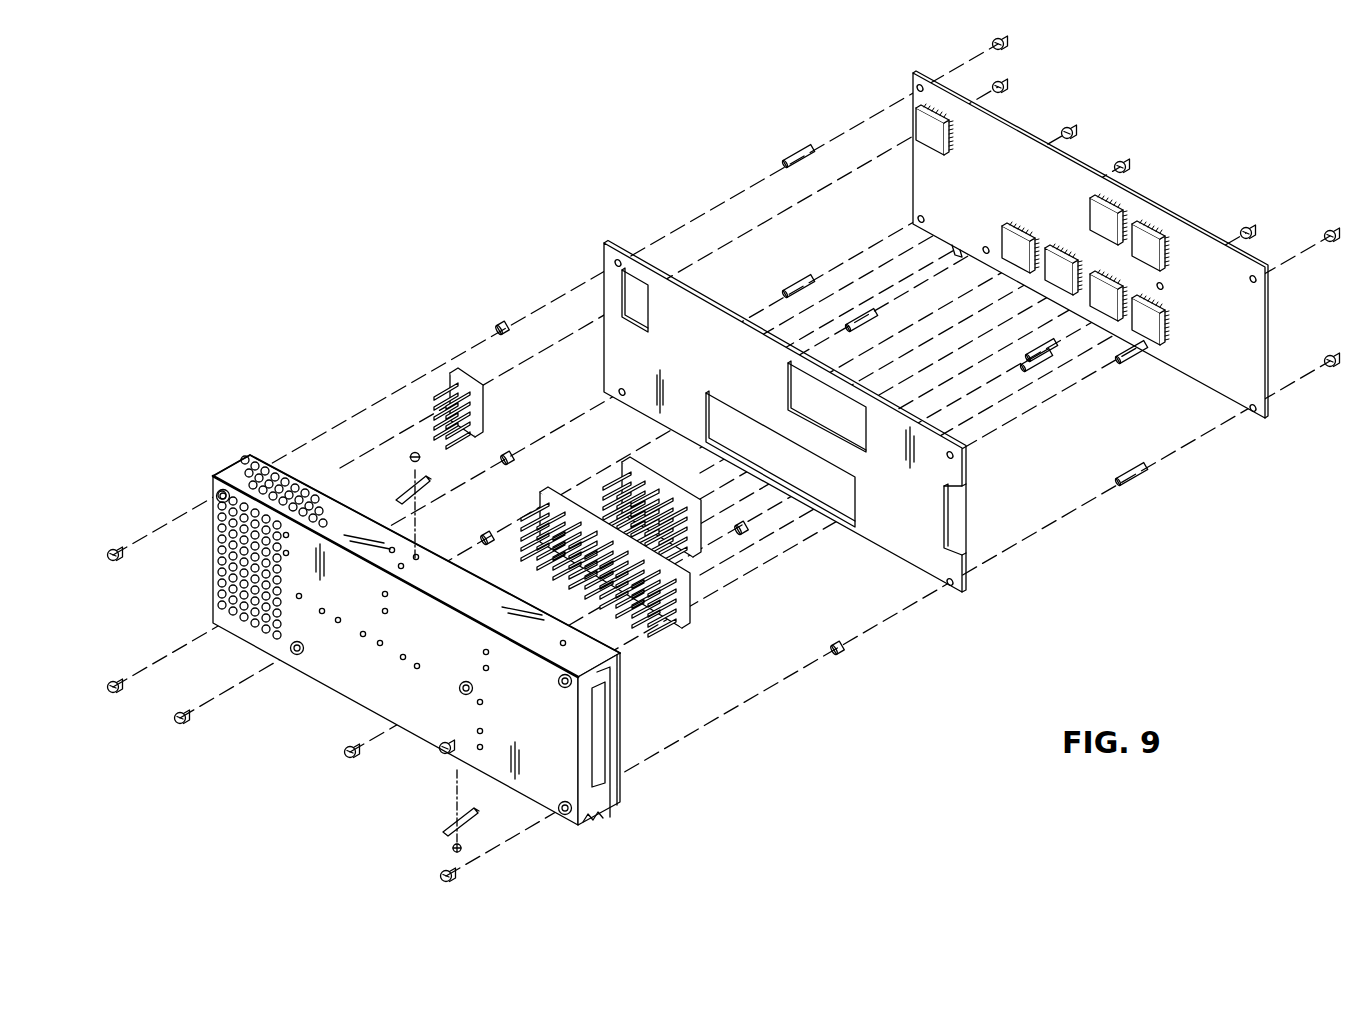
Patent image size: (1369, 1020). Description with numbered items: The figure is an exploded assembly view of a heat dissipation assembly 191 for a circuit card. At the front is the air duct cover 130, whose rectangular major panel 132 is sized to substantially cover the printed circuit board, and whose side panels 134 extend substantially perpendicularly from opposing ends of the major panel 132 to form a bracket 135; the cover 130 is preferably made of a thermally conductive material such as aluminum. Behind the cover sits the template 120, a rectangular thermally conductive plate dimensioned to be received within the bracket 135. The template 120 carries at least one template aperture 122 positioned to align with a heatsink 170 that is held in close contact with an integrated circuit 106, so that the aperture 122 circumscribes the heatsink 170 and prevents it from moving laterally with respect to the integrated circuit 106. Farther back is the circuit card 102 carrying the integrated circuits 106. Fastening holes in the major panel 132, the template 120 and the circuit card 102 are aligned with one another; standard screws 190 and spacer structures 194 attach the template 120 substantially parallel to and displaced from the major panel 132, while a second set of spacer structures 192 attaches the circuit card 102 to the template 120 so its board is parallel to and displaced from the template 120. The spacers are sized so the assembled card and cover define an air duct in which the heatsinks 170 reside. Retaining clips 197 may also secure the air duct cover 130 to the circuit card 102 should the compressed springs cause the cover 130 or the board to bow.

The circuit card 102 is at (1191, 257).
The integrated circuit 106 is at (1141, 240).
The template 120 is at (896, 507).
The template aperture 122 is at (823, 394).
The air duct cover 130 is at (320, 684).
The major panel 132 is at (453, 632).
The side panels 134 is at (475, 593).
The bracket 135 is at (600, 814).
The heatsink 170 is at (700, 548).
The screws 190 is at (437, 875).
The heat dissipation assembly 191 is at (338, 258).
The spacer structures 192 is at (791, 157).
The spacer structures 194 is at (497, 324).
The retaining clips 197 is at (397, 488).